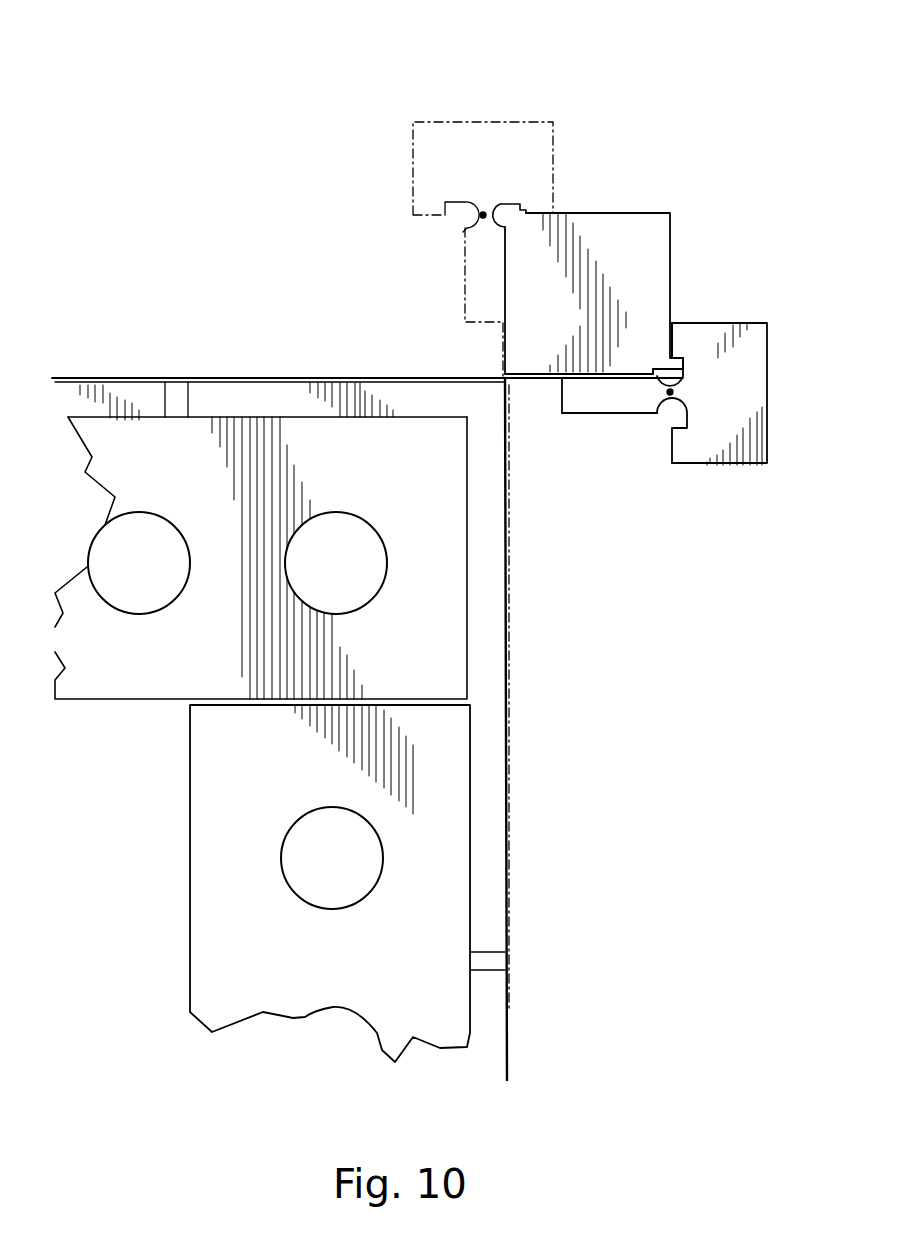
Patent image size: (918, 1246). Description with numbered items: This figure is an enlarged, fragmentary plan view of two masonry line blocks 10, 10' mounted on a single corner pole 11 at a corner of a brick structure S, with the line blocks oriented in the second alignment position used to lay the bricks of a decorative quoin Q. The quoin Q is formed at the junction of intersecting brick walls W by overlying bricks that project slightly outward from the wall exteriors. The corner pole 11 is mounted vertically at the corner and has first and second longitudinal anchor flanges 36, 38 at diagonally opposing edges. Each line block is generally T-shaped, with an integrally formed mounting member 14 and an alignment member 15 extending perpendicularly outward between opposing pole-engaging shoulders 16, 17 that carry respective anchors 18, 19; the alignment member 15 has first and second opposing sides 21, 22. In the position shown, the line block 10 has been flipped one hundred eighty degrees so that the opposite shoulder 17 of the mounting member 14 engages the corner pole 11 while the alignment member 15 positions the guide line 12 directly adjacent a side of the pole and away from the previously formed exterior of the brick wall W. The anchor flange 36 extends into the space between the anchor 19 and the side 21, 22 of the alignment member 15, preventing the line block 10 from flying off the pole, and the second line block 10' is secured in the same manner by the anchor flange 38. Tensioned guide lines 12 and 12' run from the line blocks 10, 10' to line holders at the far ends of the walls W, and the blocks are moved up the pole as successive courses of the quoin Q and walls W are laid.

The line block 10 is at (664, 477).
The line block 10' is at (425, 214).
The corner pole 11 is at (604, 152).
The guide line 12 is at (134, 352).
The guide line 12' is at (575, 729).
The mounting member 14 is at (753, 375).
The alignment member 15 is at (627, 400).
The pole-engaging shoulder 16 is at (753, 447).
The pole-engaging shoulder 17 is at (700, 332).
The anchor 18 is at (672, 447).
The anchor 19 is at (665, 338).
The first opposing side 21 is at (588, 417).
The second opposing side 22 is at (590, 369).
The first longitudinal anchor flange 36 is at (683, 365).
The second longitudinal anchor flange 38 is at (500, 205).
The decorative quoin Q is at (312, 378).
The brick structure S is at (140, 785).
The brick wall W is at (472, 935).